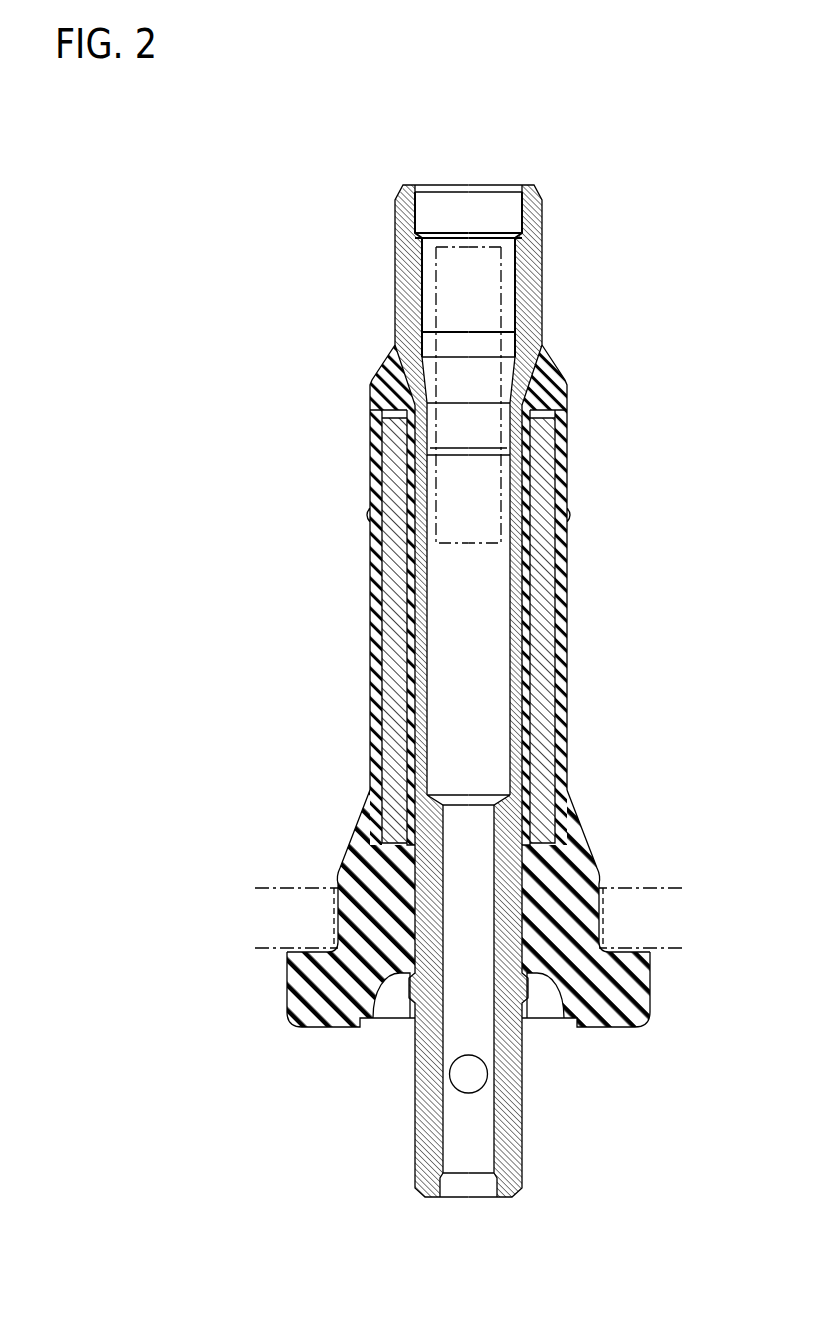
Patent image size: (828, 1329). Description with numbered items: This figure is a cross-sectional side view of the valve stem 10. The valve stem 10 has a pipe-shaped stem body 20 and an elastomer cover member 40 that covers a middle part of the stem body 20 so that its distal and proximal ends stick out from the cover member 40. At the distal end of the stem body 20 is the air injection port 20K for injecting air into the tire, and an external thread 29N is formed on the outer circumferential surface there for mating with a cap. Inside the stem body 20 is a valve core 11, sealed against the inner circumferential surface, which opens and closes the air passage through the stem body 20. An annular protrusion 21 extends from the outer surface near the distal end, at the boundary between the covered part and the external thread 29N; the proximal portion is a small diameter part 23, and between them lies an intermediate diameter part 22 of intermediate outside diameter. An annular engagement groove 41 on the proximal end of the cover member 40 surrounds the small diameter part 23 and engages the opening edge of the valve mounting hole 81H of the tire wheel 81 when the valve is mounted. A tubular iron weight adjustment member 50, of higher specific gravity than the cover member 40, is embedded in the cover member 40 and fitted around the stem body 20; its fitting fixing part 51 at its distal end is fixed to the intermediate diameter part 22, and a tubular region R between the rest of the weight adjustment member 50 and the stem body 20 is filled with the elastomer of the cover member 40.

The valve stem 10 is at (568, 577).
The valve core 11 is at (543, 328).
The stem body 20 is at (413, 803).
The air injection port 20K is at (503, 210).
The annular protrusion 21 is at (393, 368).
The intermediate diameter part 22 is at (370, 410).
The small diameter part 23 is at (530, 742).
The external thread 29N is at (541, 276).
The cover member 40 is at (560, 653).
The engagement groove 41 is at (340, 925).
The weight adjustment member 50 is at (367, 622).
The fitting fixing part 51 is at (385, 428).
The tubular region R is at (412, 570).
The tire wheel 81 is at (675, 887).
The valve mounting hole 81H is at (600, 887).